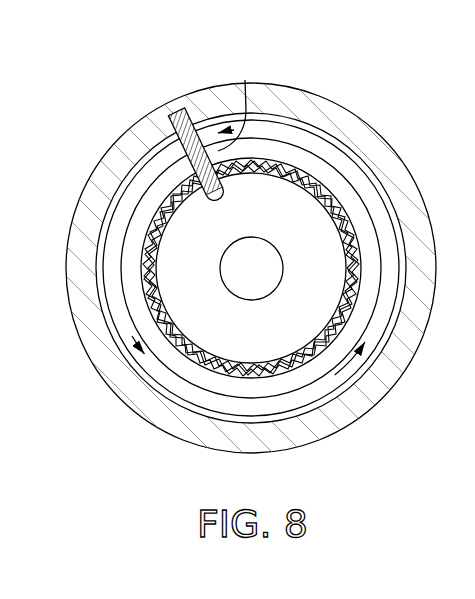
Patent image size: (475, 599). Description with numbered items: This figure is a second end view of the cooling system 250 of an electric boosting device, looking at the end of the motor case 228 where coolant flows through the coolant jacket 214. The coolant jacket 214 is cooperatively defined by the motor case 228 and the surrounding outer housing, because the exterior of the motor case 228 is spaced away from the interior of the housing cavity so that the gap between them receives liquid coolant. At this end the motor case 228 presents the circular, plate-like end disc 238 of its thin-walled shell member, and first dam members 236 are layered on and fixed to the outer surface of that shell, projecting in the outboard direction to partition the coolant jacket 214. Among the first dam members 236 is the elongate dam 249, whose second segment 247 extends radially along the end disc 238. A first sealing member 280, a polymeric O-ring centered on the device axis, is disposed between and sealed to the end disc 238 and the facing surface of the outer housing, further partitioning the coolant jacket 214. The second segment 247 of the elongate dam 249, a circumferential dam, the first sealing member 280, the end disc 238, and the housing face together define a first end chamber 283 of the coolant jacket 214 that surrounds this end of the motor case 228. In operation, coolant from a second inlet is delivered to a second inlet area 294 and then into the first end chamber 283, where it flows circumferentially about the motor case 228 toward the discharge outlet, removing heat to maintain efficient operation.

The coolant jacket 214 is at (213, 268).
The motor case 228 is at (237, 299).
The first dam member 236 is at (188, 128).
The end disc 238 is at (277, 341).
The second segment 247 is at (206, 192).
The elongate dam 249 is at (241, 101).
The cooling system 250 is at (216, 268).
The first sealing member 280 is at (153, 270).
The first end chamber 283 is at (373, 330).
The second inlet area 294 is at (170, 165).